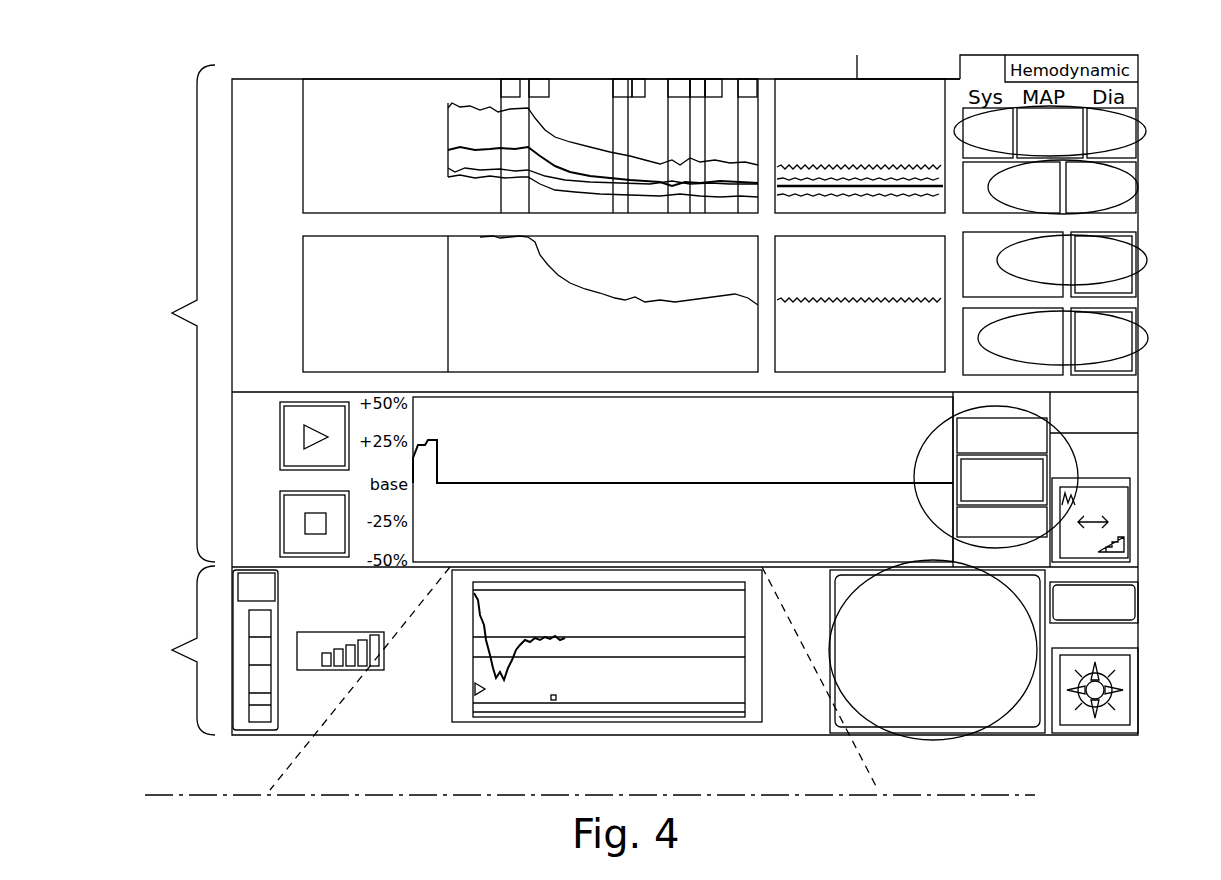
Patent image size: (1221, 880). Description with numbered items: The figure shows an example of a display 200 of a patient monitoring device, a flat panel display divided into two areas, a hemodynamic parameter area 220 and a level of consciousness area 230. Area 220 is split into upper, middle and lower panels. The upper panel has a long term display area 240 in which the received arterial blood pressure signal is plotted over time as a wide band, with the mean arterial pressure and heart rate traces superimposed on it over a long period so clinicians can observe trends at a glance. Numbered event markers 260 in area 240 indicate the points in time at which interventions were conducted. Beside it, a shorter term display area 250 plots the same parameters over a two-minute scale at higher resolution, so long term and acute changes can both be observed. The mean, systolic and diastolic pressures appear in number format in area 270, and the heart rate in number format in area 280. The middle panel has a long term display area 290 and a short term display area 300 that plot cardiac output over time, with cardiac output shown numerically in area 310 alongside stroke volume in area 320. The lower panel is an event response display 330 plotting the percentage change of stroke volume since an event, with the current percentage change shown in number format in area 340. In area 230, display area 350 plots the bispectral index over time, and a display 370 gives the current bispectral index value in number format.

The display 200 is at (340, 43).
The hemodynamic parameter area 220 is at (541, 316).
The level of consciousness area 230 is at (253, 650).
The long term display area 240 is at (375, 122).
The shorter term display area 250 is at (845, 122).
The event markers 260 is at (747, 80).
The blood pressure number display area 270 is at (1022, 100).
The heart rate number display area 280 is at (1138, 185).
The long term cardiac output display area 290 is at (375, 277).
The short term cardiac output display area 300 is at (845, 277).
The cardiac output number display area 310 is at (1147, 258).
The stroke volume number display area 320 is at (1147, 335).
The event response display 330 is at (521, 450).
The percentage change number display area 340 is at (1078, 455).
The bispectral index display area 350 is at (555, 624).
The current bispectral index display 370 is at (1037, 647).